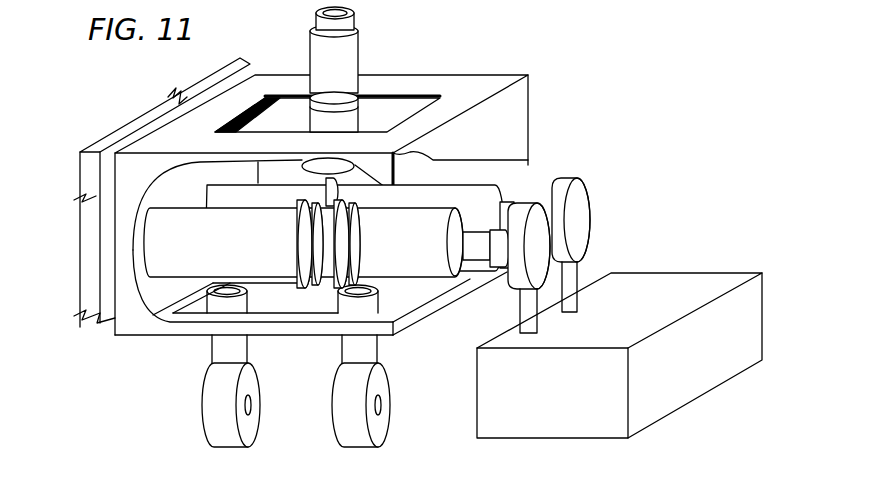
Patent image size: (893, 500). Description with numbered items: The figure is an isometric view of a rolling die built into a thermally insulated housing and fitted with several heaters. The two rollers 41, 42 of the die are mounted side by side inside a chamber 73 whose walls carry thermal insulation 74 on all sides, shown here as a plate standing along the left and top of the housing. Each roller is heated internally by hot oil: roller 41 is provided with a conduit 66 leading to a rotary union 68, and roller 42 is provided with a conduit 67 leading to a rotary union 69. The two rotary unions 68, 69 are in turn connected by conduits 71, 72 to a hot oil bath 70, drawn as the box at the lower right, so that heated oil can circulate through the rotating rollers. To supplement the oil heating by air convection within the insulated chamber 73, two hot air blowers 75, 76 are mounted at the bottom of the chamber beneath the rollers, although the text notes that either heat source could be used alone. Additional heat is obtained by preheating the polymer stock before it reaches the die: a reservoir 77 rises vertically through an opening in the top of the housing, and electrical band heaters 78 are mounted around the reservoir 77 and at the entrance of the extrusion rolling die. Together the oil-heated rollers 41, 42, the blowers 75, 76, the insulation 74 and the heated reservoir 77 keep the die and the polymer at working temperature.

The roller 41 is at (256, 265).
The roller 42 is at (455, 192).
The conduit 66 is at (472, 278).
The conduit 67 is at (521, 203).
The rotary union 68 is at (516, 270).
The rotary union 69 is at (578, 207).
The hot oil bath 70 is at (545, 403).
The conduit 71 is at (530, 313).
The conduit 72 is at (579, 289).
The chamber 73 is at (155, 325).
The thermal insulation 74 is at (82, 263).
The hot air blower 75 is at (210, 393).
The hot air blower 76 is at (340, 393).
The reservoir 77 is at (352, 28).
The electrical band heater 78 is at (365, 105).